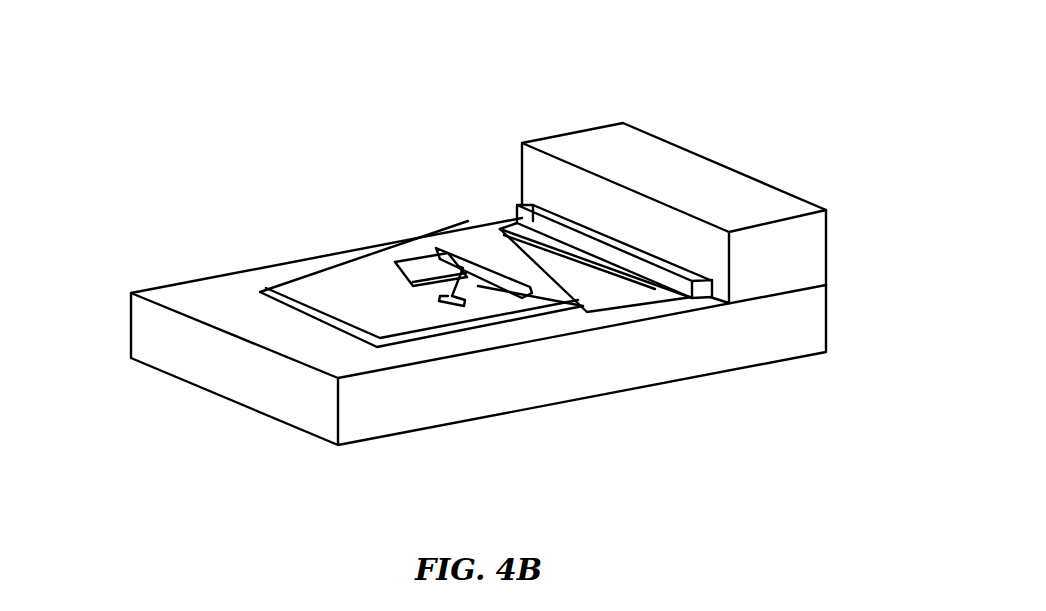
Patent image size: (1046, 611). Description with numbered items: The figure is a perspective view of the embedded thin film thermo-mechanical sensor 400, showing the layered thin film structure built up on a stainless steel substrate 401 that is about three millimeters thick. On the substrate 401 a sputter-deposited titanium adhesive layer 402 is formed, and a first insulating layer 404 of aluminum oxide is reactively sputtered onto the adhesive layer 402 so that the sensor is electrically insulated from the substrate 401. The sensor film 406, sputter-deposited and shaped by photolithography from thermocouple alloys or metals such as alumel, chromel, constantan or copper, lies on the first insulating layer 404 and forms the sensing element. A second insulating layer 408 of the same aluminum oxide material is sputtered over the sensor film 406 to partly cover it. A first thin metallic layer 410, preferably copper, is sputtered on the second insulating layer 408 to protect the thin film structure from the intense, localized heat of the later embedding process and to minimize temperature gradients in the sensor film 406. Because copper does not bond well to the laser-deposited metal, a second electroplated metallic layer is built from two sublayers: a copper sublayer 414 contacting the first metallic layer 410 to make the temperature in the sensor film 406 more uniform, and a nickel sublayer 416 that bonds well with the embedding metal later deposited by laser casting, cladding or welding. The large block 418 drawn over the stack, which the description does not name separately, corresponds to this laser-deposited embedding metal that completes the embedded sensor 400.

The embedded thin film thermo-mechanical sensor 400 is at (278, 108).
The substrate 401 is at (810, 316).
The adhesive layer 402 is at (370, 345).
The first insulating layer 404 is at (318, 297).
The sensor film 406 is at (420, 287).
The second insulating layer 408 is at (475, 270).
The first thin metallic layer 410 is at (606, 298).
The sublayer 414 is at (653, 282).
The sublayer 416 is at (704, 298).
The block 418 is at (803, 244).